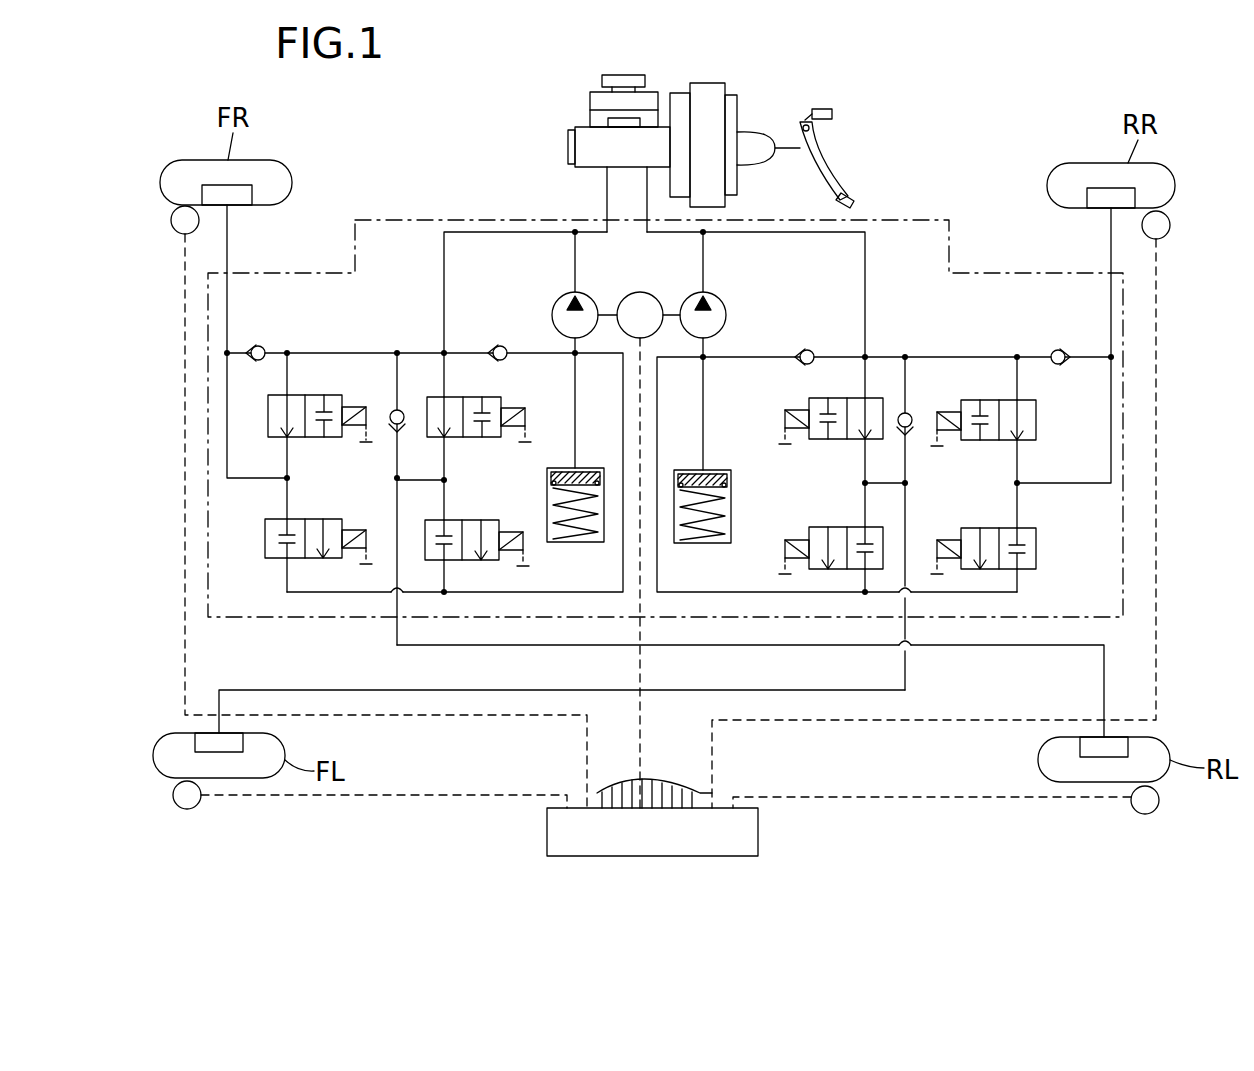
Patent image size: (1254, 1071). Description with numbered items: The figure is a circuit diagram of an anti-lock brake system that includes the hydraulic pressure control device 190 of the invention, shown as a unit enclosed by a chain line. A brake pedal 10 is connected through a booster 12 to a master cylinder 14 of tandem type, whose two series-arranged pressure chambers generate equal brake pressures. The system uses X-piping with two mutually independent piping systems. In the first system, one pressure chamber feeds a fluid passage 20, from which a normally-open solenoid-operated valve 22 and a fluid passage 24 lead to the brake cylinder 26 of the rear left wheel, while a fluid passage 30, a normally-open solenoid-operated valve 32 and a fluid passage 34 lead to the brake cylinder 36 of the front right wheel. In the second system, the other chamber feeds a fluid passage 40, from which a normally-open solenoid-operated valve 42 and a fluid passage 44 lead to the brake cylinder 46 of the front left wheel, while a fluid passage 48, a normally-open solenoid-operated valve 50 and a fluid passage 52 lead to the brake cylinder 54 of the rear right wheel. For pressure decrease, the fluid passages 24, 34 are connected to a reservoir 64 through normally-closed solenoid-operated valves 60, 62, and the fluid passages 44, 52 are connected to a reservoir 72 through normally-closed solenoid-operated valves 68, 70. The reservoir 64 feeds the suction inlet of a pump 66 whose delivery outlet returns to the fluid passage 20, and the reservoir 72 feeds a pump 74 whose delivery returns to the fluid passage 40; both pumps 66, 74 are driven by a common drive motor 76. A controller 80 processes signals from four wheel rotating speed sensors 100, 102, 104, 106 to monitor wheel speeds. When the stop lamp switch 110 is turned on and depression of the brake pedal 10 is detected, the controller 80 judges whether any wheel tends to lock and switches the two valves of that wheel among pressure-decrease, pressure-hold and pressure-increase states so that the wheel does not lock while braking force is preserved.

The brake pedal 10 is at (815, 172).
The booster 12 is at (725, 200).
The master cylinder 14 is at (578, 167).
The fluid passage 20 is at (446, 282).
The normally-open solenoid-operated valve 22 is at (500, 397).
The fluid passage 24 is at (495, 648).
The brake cylinder 26 is at (1090, 742).
The fluid passage 30 is at (350, 353).
The normally-open solenoid-operated valve 32 is at (330, 395).
The fluid passage 34 is at (232, 313).
The brake cylinder 36 is at (240, 198).
The fluid passage 40 is at (867, 295).
The normally-open solenoid-operated valve 42 is at (815, 398).
The fluid passage 44 is at (798, 690).
The brake cylinder 46 is at (232, 735).
The fluid passage 48 is at (965, 357).
The normally-open solenoid-operated valve 50 is at (975, 400).
The fluid passage 52 is at (1109, 325).
The brake cylinder 54 is at (1095, 200).
The normally-closed solenoid-operated valve 60 is at (495, 520).
The normally-closed solenoid-operated valve 62 is at (335, 519).
The reservoir 64 is at (560, 542).
The pump 66 is at (560, 299).
The normally-closed solenoid-operated valve 68 is at (820, 527).
The normally-closed solenoid-operated valve 70 is at (975, 528).
The reservoir 72 is at (690, 543).
The pump 74 is at (722, 298).
The drive motor 76 is at (648, 293).
The controller 80 is at (758, 835).
The wheel rotating speed sensor 100 is at (1135, 812).
The wheel rotating speed sensor 102 is at (176, 230).
The wheel rotating speed sensor 104 is at (196, 808).
The wheel rotating speed sensor 106 is at (1166, 236).
The stop lamp switch 110 is at (820, 109).
The hydraulic pressure control device 190 is at (455, 212).